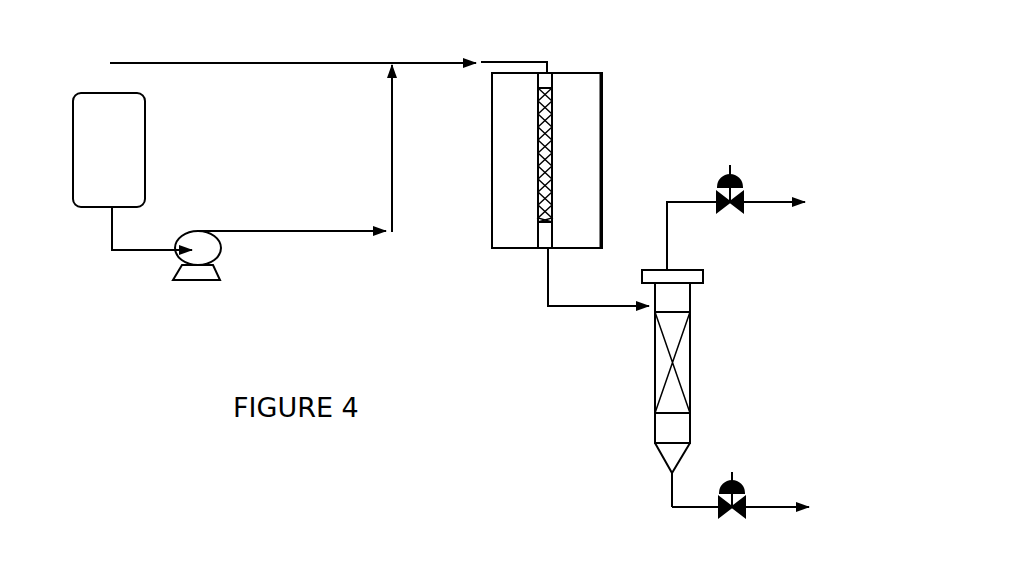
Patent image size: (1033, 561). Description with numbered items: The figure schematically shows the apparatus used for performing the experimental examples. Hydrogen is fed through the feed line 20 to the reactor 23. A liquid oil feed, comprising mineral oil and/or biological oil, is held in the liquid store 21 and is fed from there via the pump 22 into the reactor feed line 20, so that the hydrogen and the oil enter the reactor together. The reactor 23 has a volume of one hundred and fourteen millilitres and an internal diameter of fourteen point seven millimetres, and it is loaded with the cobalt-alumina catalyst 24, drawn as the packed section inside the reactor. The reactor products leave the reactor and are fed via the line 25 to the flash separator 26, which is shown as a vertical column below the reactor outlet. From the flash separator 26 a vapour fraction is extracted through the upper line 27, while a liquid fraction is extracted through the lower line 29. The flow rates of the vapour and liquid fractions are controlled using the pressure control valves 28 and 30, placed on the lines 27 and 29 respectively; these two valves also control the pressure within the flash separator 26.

The line 20 is at (312, 136).
The liquid store 21 is at (132, 171).
The pump 22 is at (230, 259).
The reactor 23 is at (604, 107).
The cobalt-alumina catalyst 24 is at (536, 148).
The line 25 is at (535, 292).
The flash separator 26 is at (694, 358).
The line 27 is at (683, 196).
The pressure control valve 28 is at (741, 171).
The line 29 is at (659, 487).
The pressure control valve 30 is at (738, 481).